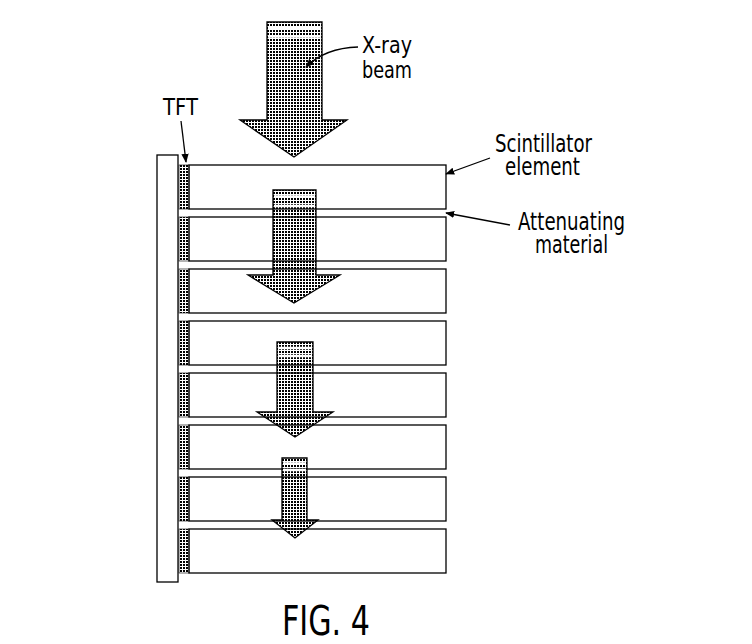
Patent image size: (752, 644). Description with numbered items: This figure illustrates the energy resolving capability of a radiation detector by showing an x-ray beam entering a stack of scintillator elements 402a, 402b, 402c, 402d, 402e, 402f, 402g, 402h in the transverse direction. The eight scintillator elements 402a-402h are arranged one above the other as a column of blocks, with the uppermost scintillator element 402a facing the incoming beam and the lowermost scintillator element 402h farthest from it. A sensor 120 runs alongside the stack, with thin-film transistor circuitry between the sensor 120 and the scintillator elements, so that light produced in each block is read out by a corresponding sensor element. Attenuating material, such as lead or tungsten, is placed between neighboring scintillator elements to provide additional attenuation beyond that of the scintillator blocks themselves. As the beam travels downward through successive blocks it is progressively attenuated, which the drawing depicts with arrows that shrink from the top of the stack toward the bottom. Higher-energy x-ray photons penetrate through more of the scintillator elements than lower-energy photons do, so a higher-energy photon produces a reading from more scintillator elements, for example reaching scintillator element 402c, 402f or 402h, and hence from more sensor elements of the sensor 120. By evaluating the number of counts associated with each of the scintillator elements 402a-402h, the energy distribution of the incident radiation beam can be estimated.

The sensor 120 is at (159, 242).
The scintillator element 402a is at (413, 203).
The scintillator element 402b is at (413, 255).
The scintillator element 402c is at (413, 307).
The scintillator element 402d is at (413, 359).
The scintillator element 402e is at (413, 411).
The scintillator element 402f is at (413, 463).
The scintillator element 402g is at (413, 515).
The scintillator element 402h is at (413, 567).